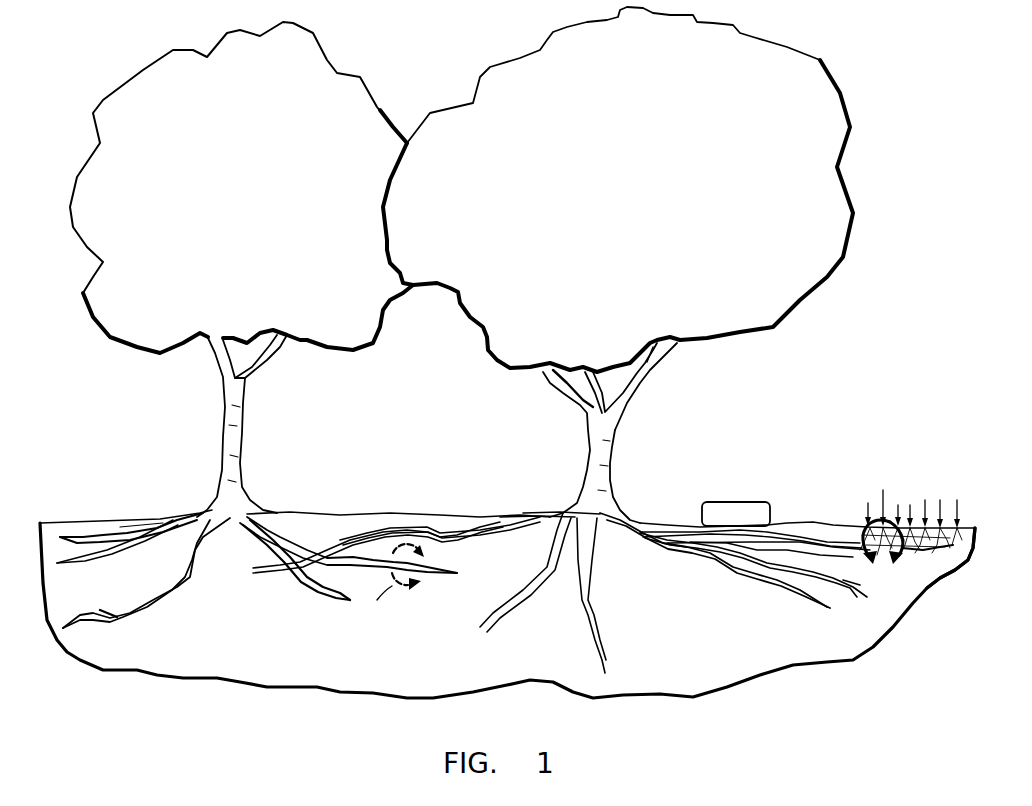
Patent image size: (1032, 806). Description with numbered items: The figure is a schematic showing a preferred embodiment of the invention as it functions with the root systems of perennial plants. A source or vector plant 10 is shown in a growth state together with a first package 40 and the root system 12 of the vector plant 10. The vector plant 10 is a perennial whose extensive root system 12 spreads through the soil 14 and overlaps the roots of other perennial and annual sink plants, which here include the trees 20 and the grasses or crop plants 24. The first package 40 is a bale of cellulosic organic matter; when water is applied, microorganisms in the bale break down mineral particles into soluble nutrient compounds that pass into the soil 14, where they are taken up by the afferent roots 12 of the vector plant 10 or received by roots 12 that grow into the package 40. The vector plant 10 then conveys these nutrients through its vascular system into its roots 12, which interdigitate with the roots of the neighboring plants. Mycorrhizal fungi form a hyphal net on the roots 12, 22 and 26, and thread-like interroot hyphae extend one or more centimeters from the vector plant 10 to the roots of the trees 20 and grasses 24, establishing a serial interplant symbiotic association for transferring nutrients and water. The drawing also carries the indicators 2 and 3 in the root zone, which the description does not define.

The vector plant 10 is at (640, 449).
The root system 12 is at (697, 557).
The soil 14 is at (420, 654).
The trees 20 is at (268, 437).
The roots 22 is at (298, 565).
The circulation of nutrients 2 is at (400, 568).
The water flow direction 3 is at (881, 551).
The grasses or crop plants 24 is at (890, 505).
The roots 26 is at (934, 553).
The first package 40 is at (735, 500).